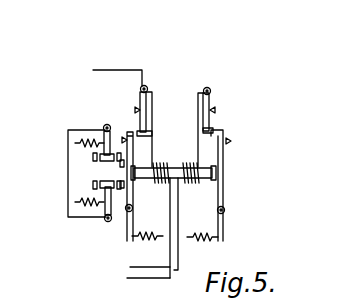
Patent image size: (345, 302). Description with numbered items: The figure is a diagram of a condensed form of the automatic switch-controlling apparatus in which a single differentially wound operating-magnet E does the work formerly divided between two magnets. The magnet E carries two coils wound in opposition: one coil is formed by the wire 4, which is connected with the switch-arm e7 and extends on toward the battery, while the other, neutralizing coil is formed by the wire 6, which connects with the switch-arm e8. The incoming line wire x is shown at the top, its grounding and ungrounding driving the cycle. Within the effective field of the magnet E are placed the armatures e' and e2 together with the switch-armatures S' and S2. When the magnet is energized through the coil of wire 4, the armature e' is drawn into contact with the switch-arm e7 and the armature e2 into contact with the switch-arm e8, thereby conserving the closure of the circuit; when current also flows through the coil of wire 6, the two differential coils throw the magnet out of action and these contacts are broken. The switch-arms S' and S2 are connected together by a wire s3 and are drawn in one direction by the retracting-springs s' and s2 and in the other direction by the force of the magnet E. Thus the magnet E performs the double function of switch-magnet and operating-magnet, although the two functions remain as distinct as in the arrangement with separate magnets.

The wire x is at (113, 68).
The switch-arm e7 is at (149, 86).
The switch-arm e8 is at (212, 89).
The armature e' is at (142, 186).
The armature e2 is at (225, 196).
The operating-magnet E is at (173, 160).
The wire 6 is at (179, 204).
The wire 4 is at (146, 279).
The wire s3 is at (68, 175).
The switch-arm S' is at (108, 132).
The switch-arm S2 is at (106, 223).
The retractile spring s' is at (89, 152).
The retractile spring s2 is at (87, 200).